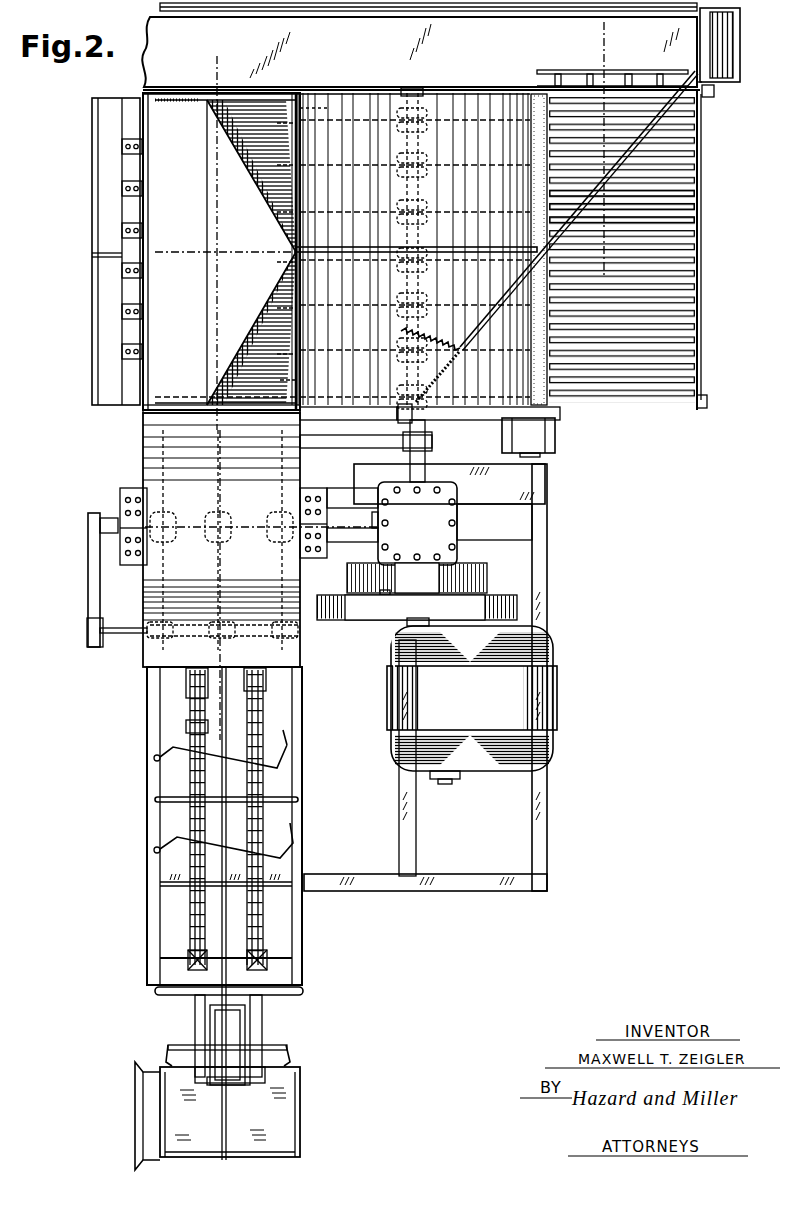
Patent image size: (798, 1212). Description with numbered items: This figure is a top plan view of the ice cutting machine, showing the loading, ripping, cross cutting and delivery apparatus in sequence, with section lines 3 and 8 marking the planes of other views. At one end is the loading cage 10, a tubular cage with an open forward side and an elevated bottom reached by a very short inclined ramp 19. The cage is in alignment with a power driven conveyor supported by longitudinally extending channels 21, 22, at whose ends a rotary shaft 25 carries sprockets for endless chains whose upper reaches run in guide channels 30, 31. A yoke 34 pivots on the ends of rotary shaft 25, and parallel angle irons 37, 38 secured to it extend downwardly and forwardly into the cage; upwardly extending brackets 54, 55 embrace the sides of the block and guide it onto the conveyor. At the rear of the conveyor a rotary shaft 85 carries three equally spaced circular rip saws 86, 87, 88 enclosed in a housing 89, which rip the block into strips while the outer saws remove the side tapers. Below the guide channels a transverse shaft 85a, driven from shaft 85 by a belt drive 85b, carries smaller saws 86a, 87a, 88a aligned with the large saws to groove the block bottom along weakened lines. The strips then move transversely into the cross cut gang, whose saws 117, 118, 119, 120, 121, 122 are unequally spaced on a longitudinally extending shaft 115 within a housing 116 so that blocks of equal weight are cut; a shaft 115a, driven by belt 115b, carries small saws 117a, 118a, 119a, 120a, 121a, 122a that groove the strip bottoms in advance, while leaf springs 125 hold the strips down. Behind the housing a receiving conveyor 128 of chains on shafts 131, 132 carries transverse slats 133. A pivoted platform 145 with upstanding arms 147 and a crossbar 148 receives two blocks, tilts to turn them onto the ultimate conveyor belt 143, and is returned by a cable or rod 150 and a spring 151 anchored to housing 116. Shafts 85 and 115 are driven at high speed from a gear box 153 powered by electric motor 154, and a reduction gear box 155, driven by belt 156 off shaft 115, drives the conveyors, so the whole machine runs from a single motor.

The section line 3- 3 is at (214, 60).
The section line 8- 8 is at (600, 28).
The cage 10 is at (303, 1076).
The inclined ramp 19 is at (150, 1114).
The longitudinally extending channel 21 is at (300, 774).
The longitudinally extending channel 22 is at (150, 776).
The rotary shaft 25 is at (178, 958).
The guide channel 30 is at (265, 814).
The guide channel 31 is at (190, 816).
The yoke 34 is at (190, 996).
The angle iron 37 is at (262, 1029).
The angle iron 38 is at (200, 1032).
The upwardly extending bracket 54 is at (290, 1058).
The upwardly extending bracket 55 is at (166, 1058).
The rotary shaft 85 is at (264, 520).
The transverse shaft 85a is at (127, 636).
The belt drive 85b is at (97, 570).
The circular saw 86 is at (284, 576).
The circular saw 87 is at (220, 572).
The circular saw 88 is at (162, 572).
The circular saw 86a is at (278, 644).
The circular saw 87a is at (212, 644).
The circular saw 88a is at (152, 652).
The housing 89 is at (162, 587).
The longitudinally extending shaft 115 is at (405, 280).
The shaft 115a is at (292, 377).
The belt 115b is at (345, 440).
The housing 116 is at (392, 96).
The saw 117 is at (438, 350).
The small saw 117a is at (292, 354).
The saw 118 is at (440, 306).
The small saw 118a is at (292, 312).
The saw 119 is at (440, 250).
The small saw 119a is at (290, 263).
The saw 120 is at (438, 213).
The small saw 120a is at (290, 214).
The saw 121 is at (436, 166).
The small saw 121a is at (288, 168).
The saw 122 is at (438, 120).
The small saw 122a is at (272, 123).
The leaf spring 125 is at (124, 313).
The receiving conveyor 128 is at (702, 276).
The shaft 131 is at (706, 397).
The shaft 132 is at (714, 92).
The slat 133 is at (690, 222).
The endless belt 143 is at (500, 52).
The pivoted platform 145 is at (662, 80).
The upstanding arm 147 is at (584, 78).
The crossbar 148 is at (645, 78).
The cable or rod 150 is at (665, 112).
The spring 151 is at (416, 395).
The gear box 153 is at (437, 519).
The electric motor 154 is at (520, 650).
The reduction gear box 155 is at (557, 432).
The belt 156 is at (470, 410).